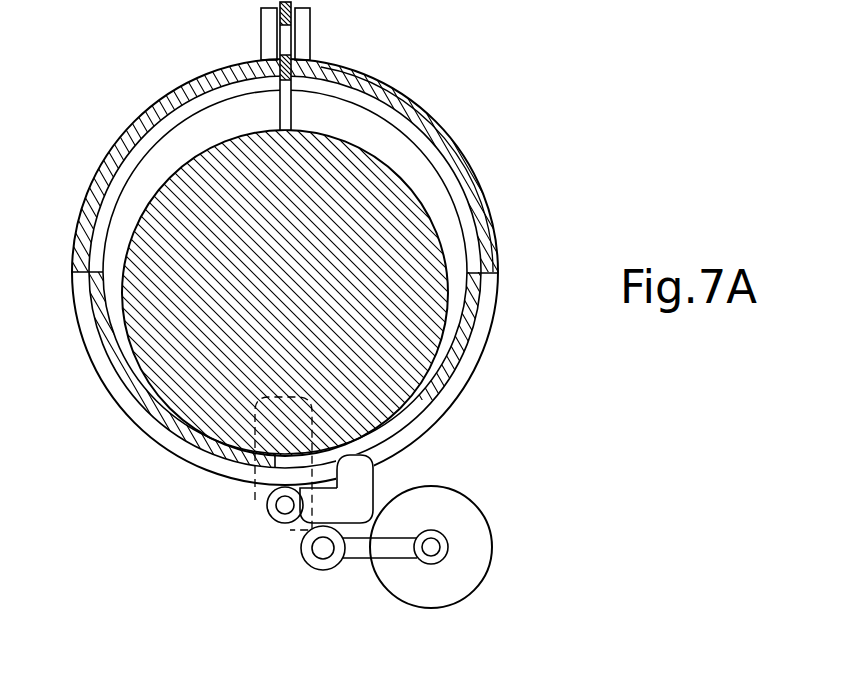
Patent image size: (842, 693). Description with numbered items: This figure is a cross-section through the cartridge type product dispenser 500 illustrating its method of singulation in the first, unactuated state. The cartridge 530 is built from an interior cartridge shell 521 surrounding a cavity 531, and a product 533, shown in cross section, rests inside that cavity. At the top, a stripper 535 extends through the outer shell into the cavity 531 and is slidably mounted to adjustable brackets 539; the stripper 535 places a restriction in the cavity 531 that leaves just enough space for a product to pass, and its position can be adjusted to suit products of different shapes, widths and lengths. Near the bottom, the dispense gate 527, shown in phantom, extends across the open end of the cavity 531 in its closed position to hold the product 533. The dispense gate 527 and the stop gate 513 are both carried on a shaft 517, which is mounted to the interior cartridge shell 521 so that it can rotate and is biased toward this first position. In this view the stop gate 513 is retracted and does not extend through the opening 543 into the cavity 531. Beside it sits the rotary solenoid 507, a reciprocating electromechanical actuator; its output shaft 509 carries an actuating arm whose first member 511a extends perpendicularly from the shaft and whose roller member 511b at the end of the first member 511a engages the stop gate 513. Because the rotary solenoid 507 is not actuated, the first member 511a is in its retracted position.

The cartridge type product dispenser 500 is at (587, 391).
The rotary solenoid 507 is at (477, 528).
The output shaft 509 is at (434, 549).
The first member 511a is at (357, 552).
The roller member 511b is at (322, 560).
The stop gate 513 is at (363, 490).
The shaft 517 is at (285, 507).
The interior cartridge shell 521 is at (100, 346).
The dispense gate 527 is at (258, 512).
The cartridge 530 is at (459, 136).
The cavity 531 is at (185, 142).
The product 533 is at (420, 250).
The stripper 535 is at (291, 112).
The adjustable brackets 539 is at (263, 37).
The opening 543 is at (352, 440).